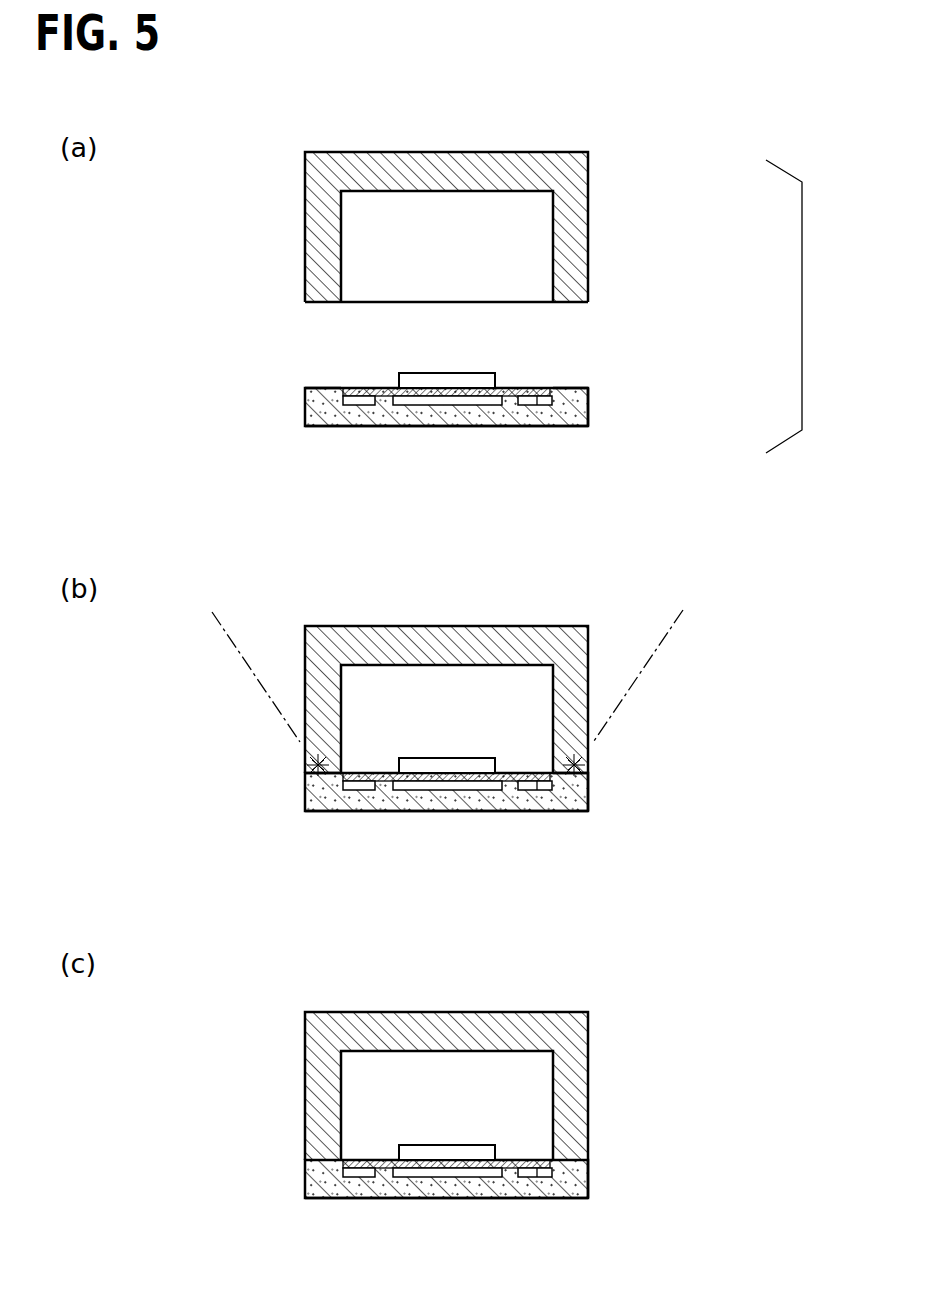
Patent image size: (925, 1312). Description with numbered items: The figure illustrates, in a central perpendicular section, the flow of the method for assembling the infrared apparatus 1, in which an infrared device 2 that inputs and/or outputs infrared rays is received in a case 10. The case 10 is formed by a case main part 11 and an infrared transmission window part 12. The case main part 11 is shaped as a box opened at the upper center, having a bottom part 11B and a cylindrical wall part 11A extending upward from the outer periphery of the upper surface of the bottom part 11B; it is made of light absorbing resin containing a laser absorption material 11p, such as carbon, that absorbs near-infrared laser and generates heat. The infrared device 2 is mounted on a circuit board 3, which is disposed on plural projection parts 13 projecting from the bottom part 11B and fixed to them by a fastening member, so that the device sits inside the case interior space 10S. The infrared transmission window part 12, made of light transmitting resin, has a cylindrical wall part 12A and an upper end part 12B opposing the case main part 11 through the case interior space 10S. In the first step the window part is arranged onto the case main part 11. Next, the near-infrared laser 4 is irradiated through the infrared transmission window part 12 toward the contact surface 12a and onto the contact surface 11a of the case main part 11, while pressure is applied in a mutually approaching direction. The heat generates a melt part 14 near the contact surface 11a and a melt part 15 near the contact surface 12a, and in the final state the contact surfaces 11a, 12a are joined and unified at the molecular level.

The infrared apparatus 1 is at (296, 980).
The infrared device 2 is at (440, 378).
The circuit board 3 is at (540, 405).
The near-infrared laser 4 is at (252, 668).
The case 10 is at (590, 624).
The case interior space 10S is at (517, 213).
The case main part 11 is at (304, 426).
The cylindrical wall part 11A is at (325, 400).
The bottom part 11B is at (348, 426).
The contact surface 11a is at (322, 388).
The laser absorption material 11p is at (588, 426).
The infrared transmission window part 12 is at (320, 218).
The cylindrical wall part 12A is at (322, 250).
The upper end part 12B is at (386, 165).
The contact surface 12a is at (305, 300).
The projection part 13 is at (380, 400).
The melt part 14 is at (338, 773).
The melt part 15 is at (314, 763).